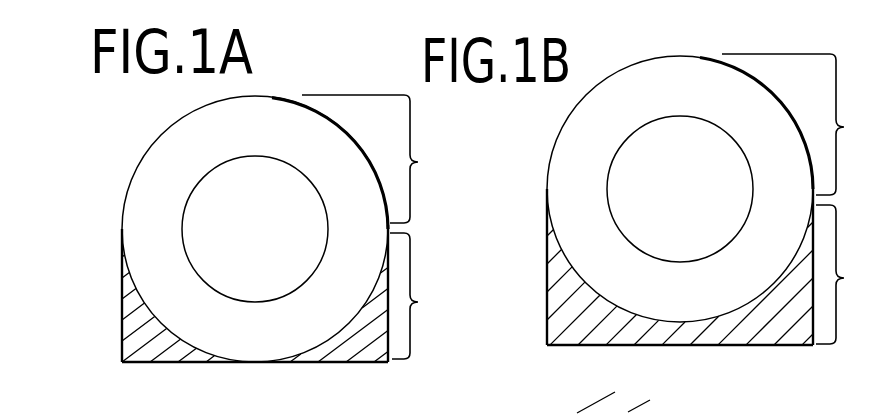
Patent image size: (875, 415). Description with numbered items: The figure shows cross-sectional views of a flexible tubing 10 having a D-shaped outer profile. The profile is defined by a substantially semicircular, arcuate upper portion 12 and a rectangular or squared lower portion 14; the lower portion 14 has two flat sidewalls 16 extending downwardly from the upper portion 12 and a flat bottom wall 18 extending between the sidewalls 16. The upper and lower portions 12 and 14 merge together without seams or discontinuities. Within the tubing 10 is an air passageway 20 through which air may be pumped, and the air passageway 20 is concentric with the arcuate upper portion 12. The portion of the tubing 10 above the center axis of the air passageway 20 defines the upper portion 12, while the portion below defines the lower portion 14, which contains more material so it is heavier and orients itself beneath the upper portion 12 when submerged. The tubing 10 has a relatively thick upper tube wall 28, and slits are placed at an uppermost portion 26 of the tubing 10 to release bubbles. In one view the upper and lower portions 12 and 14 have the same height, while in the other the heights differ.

In FIG. 1A, the flexible tubing 10 is at (124, 181).
In FIG. 1B, the flexible tubing 10 is at (545, 135).
In FIG. 1A, the upper portion 12 is at (373, 159).
In FIG. 1B, the upper portion 12 is at (795, 124).
In FIG. 1A, the lower portion 14 is at (283, 297).
In FIG. 1B, the lower portion 14 is at (709, 275).
In FIG. 1A, the sidewalls 16 is at (122, 310).
In FIG. 1B, the sidewalls 16 is at (547, 306).
In FIG. 1A, the bottom wall 18 is at (177, 362).
In FIG. 1B, the bottom wall 18 is at (580, 346).
In FIG. 1A, the air passageway 20 is at (273, 245).
In FIG. 1B, the air passageway 20 is at (680, 189).
In FIG. 1A, the uppermost portion 26 is at (270, 97).
In FIG. 1B, the uppermost portion 26 is at (683, 57).
In FIG. 1A, the upper tube wall 28 is at (213, 117).
In FIG. 1B, the upper tube wall 28 is at (617, 83).